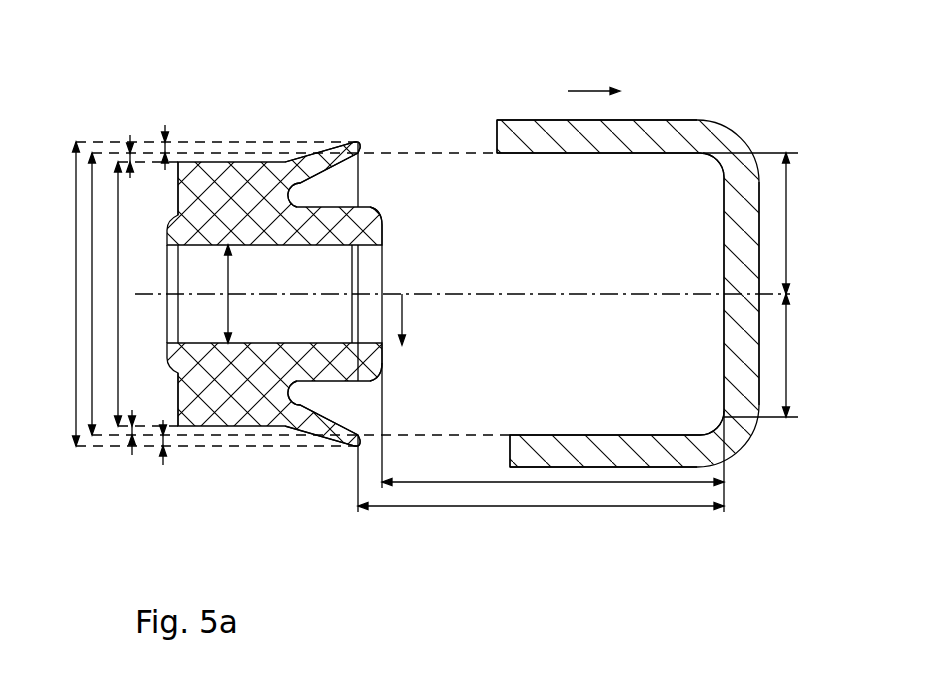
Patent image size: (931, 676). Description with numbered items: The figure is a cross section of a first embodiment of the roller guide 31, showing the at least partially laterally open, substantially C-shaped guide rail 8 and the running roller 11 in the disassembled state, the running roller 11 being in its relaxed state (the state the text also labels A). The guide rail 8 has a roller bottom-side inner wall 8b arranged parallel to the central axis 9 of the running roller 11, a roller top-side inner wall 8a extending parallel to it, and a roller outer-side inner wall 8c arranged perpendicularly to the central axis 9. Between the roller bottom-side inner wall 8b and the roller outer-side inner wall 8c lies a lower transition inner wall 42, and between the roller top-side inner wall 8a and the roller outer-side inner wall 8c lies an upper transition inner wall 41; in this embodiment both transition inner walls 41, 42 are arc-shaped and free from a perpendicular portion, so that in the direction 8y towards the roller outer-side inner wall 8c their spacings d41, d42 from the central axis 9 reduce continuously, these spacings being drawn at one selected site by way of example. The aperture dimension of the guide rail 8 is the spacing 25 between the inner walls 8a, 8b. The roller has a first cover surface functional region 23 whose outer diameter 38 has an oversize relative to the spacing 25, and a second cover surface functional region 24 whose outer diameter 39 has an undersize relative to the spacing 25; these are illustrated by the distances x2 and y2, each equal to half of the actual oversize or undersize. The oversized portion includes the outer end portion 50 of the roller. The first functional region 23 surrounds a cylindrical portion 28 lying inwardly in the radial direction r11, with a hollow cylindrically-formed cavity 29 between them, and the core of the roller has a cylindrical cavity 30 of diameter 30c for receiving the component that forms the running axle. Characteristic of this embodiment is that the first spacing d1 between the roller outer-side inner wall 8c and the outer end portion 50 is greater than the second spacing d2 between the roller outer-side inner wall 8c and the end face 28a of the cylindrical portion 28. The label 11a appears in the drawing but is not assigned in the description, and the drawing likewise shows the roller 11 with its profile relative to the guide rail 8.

The guide rail 8 is at (735, 97).
The roller top-side inner wall 8a is at (546, 154).
The roller bottom-side inner wall 8b is at (537, 435).
The roller outer-side inner wall 8c is at (722, 215).
The direction 8y is at (590, 90).
The upper transition inner wall 41 is at (713, 157).
The lower transition inner wall 42 is at (712, 420).
The spacing d41 is at (790, 236).
The spacing d42 is at (790, 355).
The first spacing d1 is at (500, 507).
The second spacing d2 is at (596, 483).
The radial direction r11 is at (404, 320).
The cylindrical portion 28 is at (386, 208).
The end face 28a is at (383, 235).
The cavity 29 is at (305, 195).
The cylindrical cavity 30 is at (397, 271).
The diameter 30c is at (229, 280).
The outer end portion 50 is at (362, 141).
The central axis 9 is at (156, 292).
The roller guide 31 is at (83, 90).
The bearing outer surface 11a is at (133, 78).
The running roller 11 is at (261, 93).
The second cover surface functional region 24 is at (228, 113).
The first cover surface functional region 23 is at (315, 130).
The outer diameter 38 is at (76, 252).
The outer diameter 39 is at (92, 212).
The spacing 25 is at (118, 220).
The distance y/2 y2 is at (128, 150).
The distance x/2 x2 is at (165, 148).